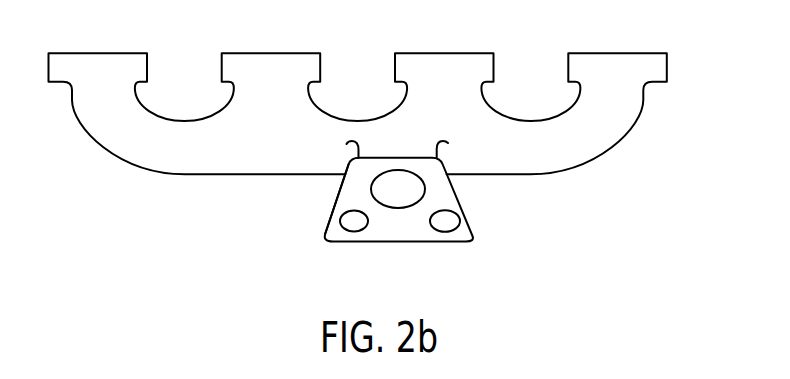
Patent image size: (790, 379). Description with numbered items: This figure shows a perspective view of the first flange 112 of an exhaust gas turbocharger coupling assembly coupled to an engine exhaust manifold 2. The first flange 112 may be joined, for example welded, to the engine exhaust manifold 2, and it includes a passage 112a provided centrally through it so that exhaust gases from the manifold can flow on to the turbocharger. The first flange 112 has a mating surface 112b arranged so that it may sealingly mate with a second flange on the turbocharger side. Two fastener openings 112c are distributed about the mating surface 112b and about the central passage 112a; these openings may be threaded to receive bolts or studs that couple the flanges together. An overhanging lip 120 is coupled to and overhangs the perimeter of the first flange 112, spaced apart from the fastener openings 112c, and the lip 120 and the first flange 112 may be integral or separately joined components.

The engine exhaust manifold 2 is at (628, 99).
The first flange 112 is at (398, 223).
The passage 112a is at (400, 184).
The mating surface 112b is at (341, 206).
The fastener openings 112c is at (358, 217).
The overhanging lip 120 is at (395, 146).